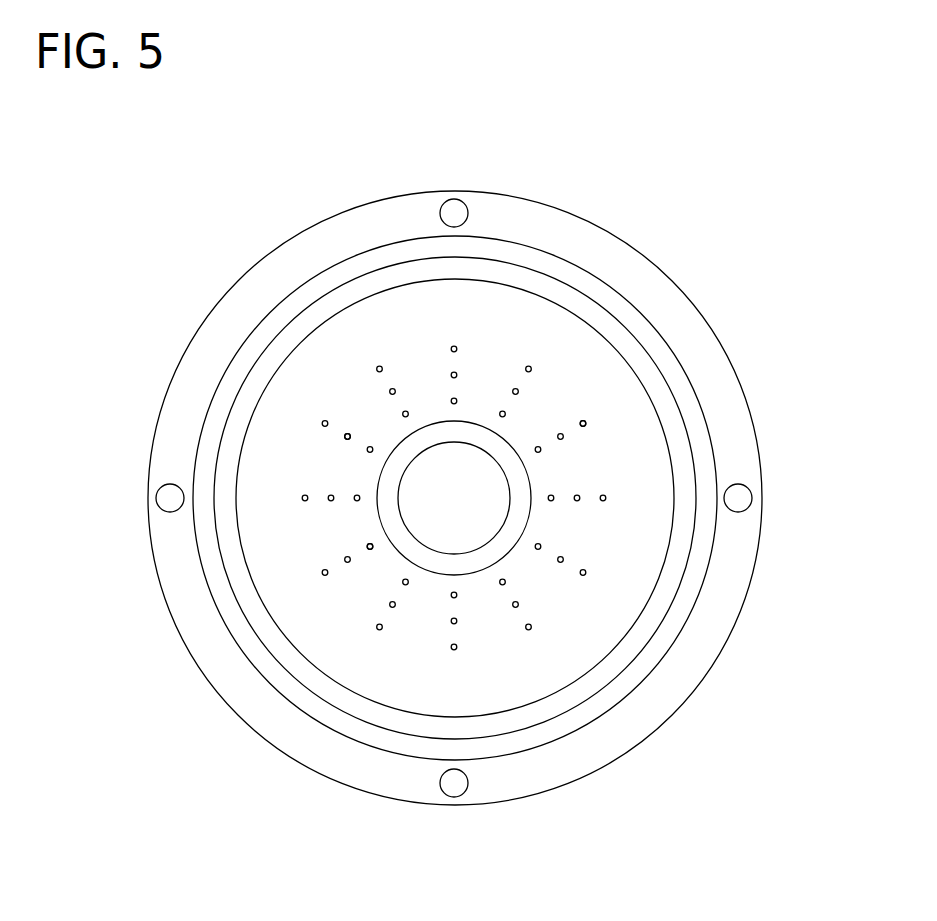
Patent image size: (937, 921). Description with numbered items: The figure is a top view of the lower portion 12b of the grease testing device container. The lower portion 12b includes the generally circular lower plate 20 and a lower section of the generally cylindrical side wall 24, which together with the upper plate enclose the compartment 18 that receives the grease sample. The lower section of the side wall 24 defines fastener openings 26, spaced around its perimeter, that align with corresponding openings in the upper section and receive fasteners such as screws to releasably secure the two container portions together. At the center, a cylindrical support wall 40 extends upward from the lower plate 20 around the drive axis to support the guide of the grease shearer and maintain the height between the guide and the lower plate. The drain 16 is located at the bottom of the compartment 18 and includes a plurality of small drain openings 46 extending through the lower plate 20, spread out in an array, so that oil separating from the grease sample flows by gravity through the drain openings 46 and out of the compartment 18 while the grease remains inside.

The lower portion 12b is at (710, 322).
The side wall 24 is at (612, 248).
The fastener openings 26 is at (459, 212).
The lower plate 20 is at (594, 639).
The compartment 18 is at (423, 684).
The support wall 40 is at (412, 447).
The drain 16 is at (520, 360).
The drain openings 46 is at (348, 438).